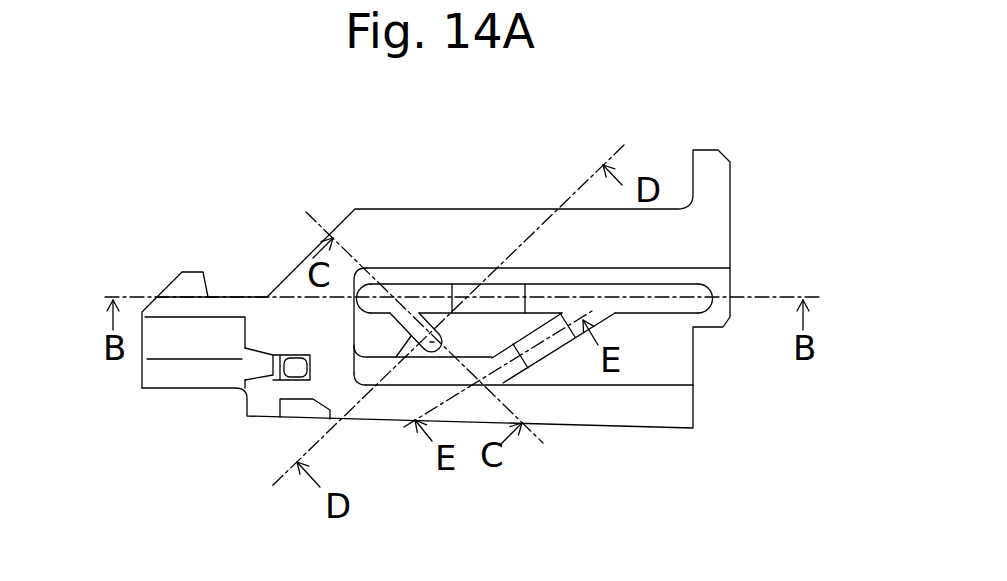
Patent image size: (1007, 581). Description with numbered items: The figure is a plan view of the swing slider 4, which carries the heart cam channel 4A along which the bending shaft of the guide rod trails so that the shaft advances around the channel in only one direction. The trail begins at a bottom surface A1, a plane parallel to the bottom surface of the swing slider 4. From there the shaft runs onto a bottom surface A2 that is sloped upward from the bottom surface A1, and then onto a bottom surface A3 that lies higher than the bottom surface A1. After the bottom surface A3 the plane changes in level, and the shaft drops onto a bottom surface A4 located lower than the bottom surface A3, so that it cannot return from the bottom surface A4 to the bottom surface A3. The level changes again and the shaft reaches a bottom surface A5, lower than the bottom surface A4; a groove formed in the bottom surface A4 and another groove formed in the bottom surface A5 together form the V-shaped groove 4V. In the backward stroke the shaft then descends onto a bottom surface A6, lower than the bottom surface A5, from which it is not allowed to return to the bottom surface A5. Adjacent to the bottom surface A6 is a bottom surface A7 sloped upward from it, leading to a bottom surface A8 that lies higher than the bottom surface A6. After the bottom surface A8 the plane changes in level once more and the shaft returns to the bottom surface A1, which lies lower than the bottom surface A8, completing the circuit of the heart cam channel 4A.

The swing slider 4 is at (165, 285).
The heart cam channel 4A is at (701, 315).
The V-shaped groove 4V is at (438, 328).
The bottom surface A1 is at (613, 268).
The bottom surface A2 is at (490, 293).
The bottom surface A3 is at (436, 296).
The bottom surface A4 is at (356, 299).
The bottom surface A5 is at (405, 334).
The bottom surface A6 is at (408, 360).
The bottom surface A7 is at (543, 356).
The bottom surface A8 is at (613, 315).